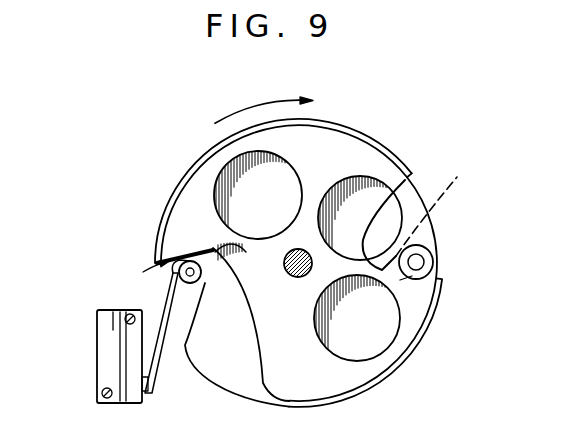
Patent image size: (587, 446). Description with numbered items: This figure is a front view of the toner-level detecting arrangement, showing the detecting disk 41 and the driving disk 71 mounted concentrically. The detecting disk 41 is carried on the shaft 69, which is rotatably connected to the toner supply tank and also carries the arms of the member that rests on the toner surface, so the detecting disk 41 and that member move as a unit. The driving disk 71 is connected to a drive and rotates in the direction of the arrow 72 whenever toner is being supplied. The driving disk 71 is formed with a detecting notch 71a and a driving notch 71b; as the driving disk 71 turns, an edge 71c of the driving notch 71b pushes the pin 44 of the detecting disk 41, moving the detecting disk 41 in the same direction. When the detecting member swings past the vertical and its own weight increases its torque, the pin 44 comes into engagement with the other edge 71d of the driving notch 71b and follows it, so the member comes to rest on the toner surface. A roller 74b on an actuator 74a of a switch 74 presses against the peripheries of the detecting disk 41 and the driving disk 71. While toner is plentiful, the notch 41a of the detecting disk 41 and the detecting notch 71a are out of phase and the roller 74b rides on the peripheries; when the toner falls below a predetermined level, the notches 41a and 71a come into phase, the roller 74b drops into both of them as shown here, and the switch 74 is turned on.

The detecting disk 41 is at (366, 374).
The notch 41a is at (250, 344).
The pin 44 is at (418, 262).
The shaft 69 is at (291, 278).
The driving disk 71 is at (197, 366).
The detecting notch 71a is at (137, 271).
The driving notch 71b is at (446, 192).
The edge 71c is at (409, 222).
The edge 71d is at (424, 220).
The arrow 72 is at (247, 107).
The switch 74 is at (103, 346).
The actuator 74a is at (173, 297).
The roller 74b is at (193, 254).